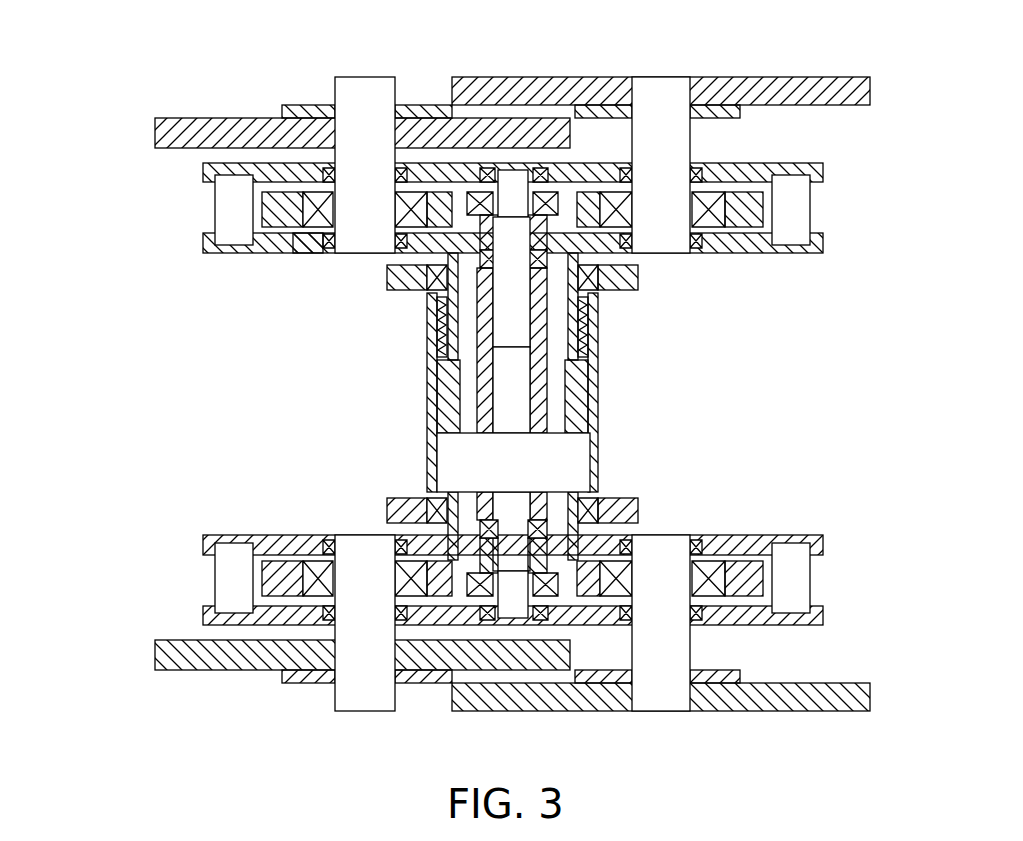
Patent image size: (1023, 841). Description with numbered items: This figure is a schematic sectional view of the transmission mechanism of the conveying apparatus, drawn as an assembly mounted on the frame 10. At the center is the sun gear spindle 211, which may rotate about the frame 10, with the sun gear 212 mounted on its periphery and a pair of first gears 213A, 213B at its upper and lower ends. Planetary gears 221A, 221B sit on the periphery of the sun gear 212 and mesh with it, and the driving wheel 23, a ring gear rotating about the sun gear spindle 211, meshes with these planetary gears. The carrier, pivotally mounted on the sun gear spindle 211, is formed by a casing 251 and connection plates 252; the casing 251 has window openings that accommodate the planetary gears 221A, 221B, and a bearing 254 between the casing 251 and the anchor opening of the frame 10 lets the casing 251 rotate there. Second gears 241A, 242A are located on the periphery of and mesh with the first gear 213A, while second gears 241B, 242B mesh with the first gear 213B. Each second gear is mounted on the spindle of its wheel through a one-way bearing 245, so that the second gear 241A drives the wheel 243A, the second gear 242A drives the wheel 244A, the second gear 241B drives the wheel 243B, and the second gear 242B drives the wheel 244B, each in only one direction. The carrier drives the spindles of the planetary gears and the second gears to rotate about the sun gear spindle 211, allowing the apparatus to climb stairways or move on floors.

The frame 10 is at (640, 280).
The driving wheel 23 is at (600, 460).
The sun gear spindle 211 is at (520, 400).
The sun gear 212 is at (475, 415).
The first gear 213A is at (548, 215).
The first gear 213B is at (548, 572).
The planetary gear 221A is at (430, 380).
The planetary gear 221B is at (598, 372).
The second gear 241A is at (265, 207).
The second gear 241B is at (265, 578).
The second gear 242A is at (763, 197).
The second gear 242B is at (763, 591).
The wheel 243A is at (155, 131).
The wheel 243B is at (155, 657).
The wheel 244A is at (878, 90).
The wheel 244B is at (878, 698).
The one-way bearing 245 is at (302, 242).
The casing 251 is at (600, 320).
The connection plate 252 is at (815, 168).
The bearing 254 is at (410, 290).